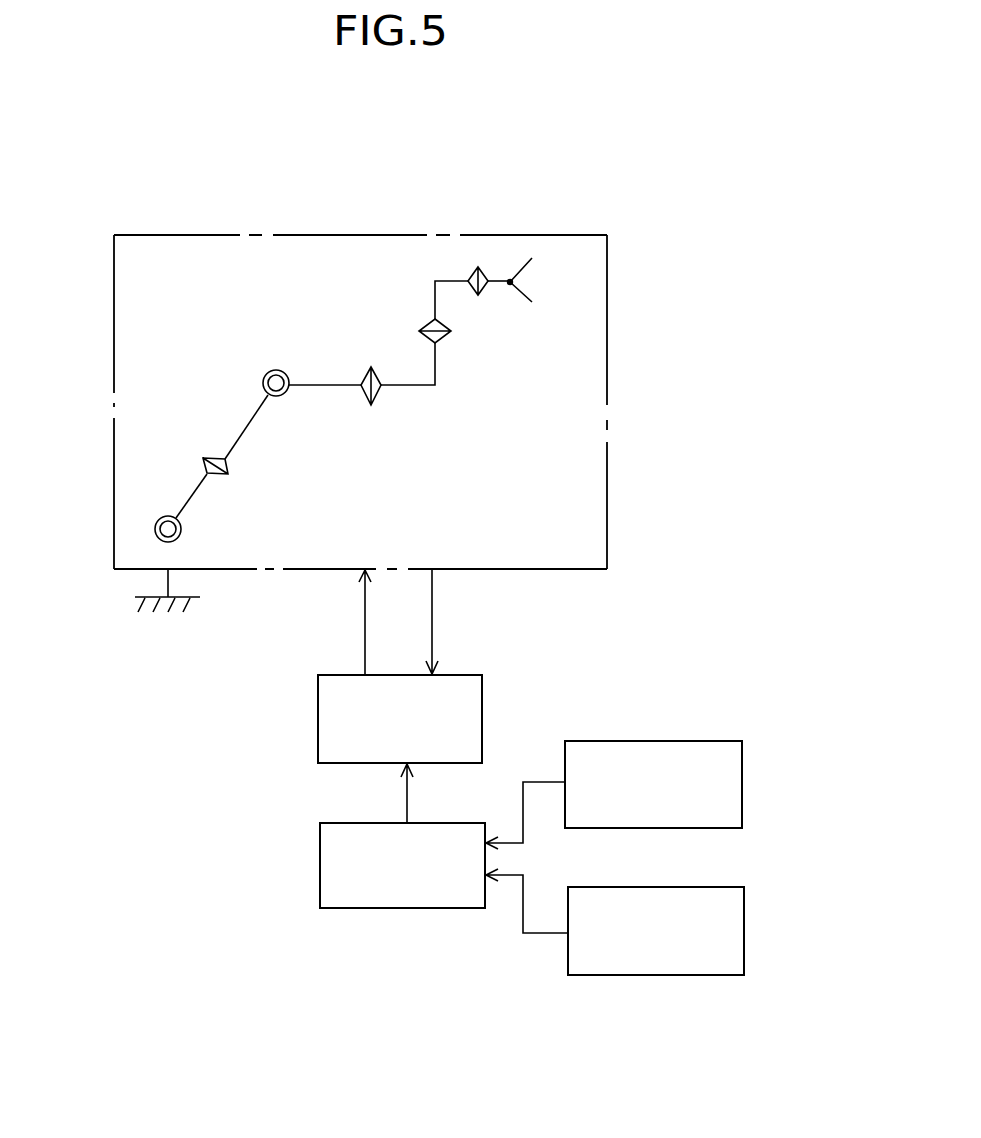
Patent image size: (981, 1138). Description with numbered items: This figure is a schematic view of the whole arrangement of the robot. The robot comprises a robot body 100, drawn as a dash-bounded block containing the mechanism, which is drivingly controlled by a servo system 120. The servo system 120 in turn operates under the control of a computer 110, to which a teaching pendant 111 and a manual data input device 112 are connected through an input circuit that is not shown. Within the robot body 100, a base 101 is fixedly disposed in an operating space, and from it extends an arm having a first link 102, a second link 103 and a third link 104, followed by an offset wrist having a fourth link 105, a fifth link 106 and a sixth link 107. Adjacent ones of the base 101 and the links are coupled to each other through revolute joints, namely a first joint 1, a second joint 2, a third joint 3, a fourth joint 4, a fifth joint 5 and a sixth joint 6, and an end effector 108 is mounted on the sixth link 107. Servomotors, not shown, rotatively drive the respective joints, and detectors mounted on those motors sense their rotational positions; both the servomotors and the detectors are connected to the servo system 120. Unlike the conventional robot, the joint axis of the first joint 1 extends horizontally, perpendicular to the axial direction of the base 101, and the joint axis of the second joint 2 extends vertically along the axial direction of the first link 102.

The first joint 1 is at (183, 535).
The second joint 2 is at (228, 465).
The third joint 3 is at (263, 376).
The fourth joint 4 is at (380, 398).
The fifth joint 5 is at (423, 325).
The sixth joint 6 is at (486, 290).
The robot body 100 is at (608, 512).
The base 101 is at (167, 581).
The first link 102 is at (198, 490).
The second link 103 is at (249, 421).
The third link 104 is at (330, 384).
The fourth link 105 is at (417, 388).
The fifth link 106 is at (450, 282).
The sixth link 107 is at (509, 279).
The end effector 108 is at (524, 260).
The computer 110 is at (318, 859).
The teaching pendant 111 is at (742, 758).
The manual data input device 112 is at (744, 912).
The servo system 120 is at (317, 713).